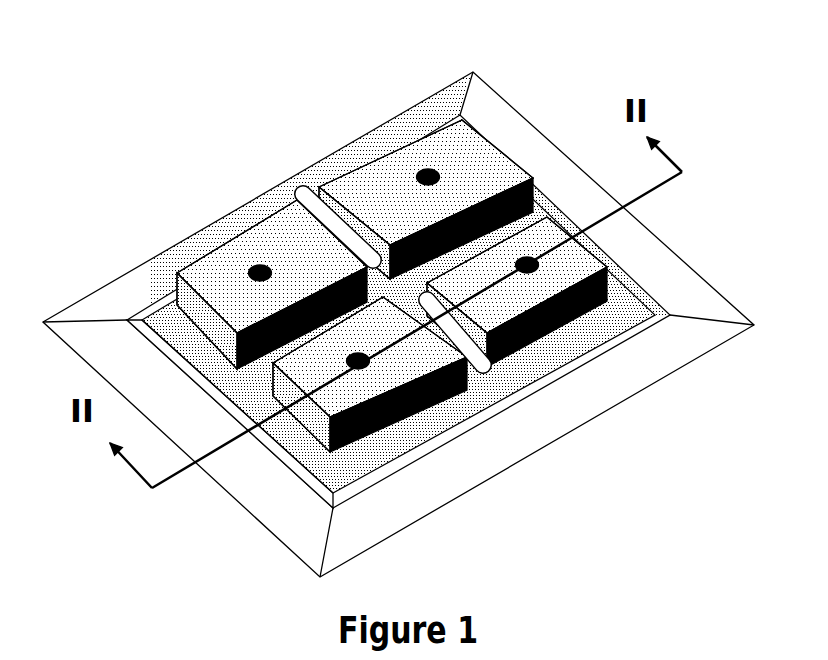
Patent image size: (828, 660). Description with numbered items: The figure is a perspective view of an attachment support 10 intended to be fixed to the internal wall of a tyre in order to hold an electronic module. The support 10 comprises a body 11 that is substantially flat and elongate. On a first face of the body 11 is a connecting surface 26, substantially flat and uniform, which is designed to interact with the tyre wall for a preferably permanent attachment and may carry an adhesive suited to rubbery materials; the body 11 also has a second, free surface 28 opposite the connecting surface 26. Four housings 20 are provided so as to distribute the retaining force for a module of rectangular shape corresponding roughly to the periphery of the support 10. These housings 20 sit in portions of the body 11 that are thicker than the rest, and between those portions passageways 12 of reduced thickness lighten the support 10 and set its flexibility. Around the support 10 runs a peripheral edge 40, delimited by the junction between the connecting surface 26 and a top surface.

The attachment support 10 is at (350, 113).
The body 11 is at (287, 237).
The passageways 12 is at (353, 235).
The housing 20 is at (425, 178).
The connecting surface 26 is at (584, 428).
The free surface 28 is at (367, 388).
The peripheral edge 40 is at (676, 275).